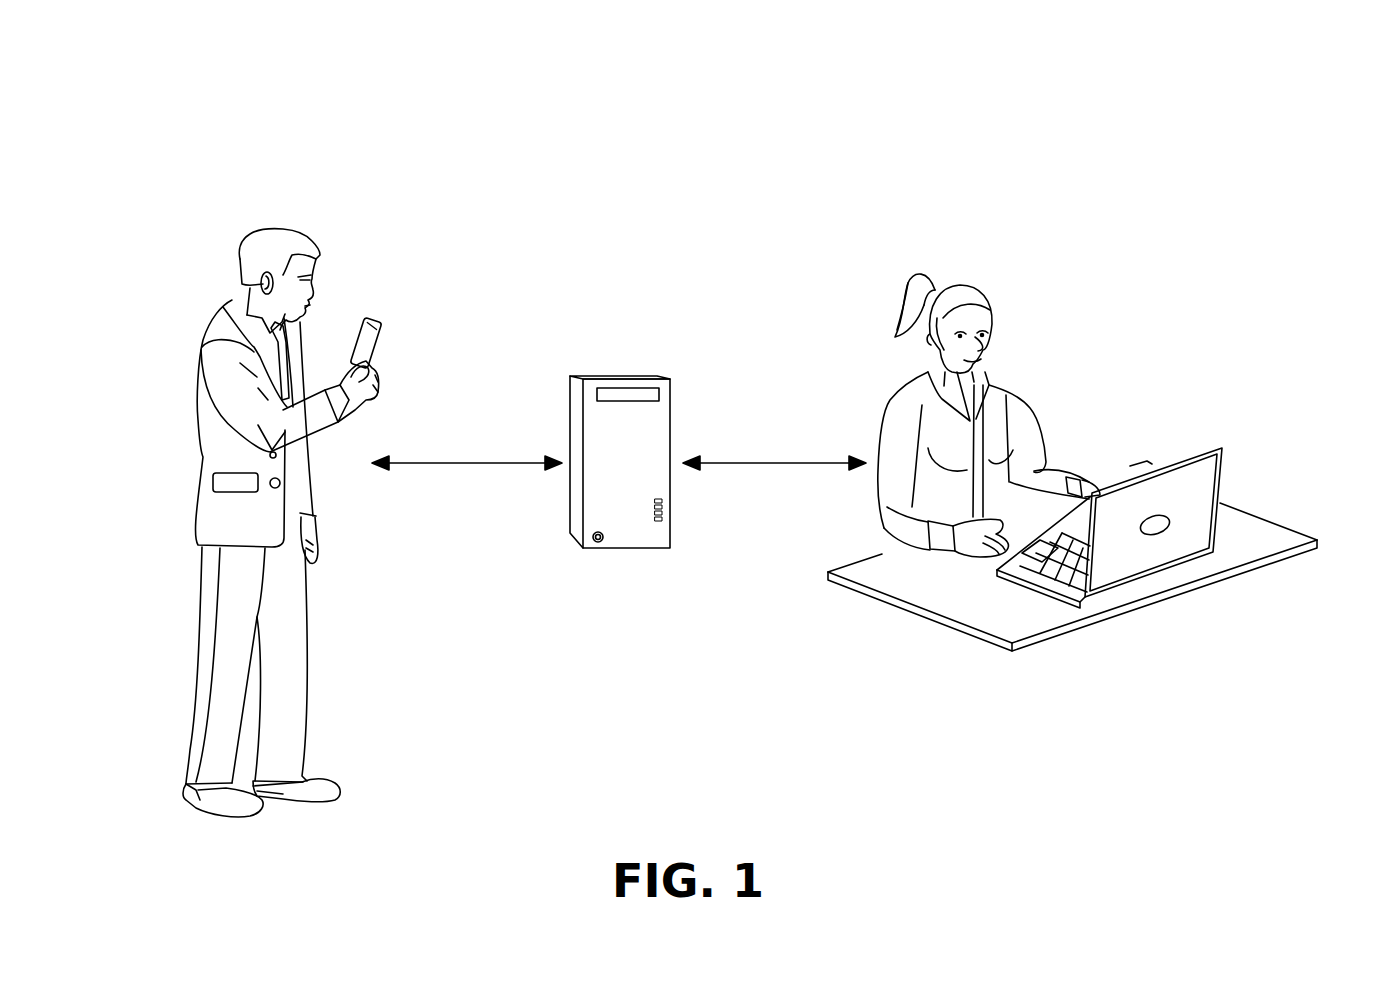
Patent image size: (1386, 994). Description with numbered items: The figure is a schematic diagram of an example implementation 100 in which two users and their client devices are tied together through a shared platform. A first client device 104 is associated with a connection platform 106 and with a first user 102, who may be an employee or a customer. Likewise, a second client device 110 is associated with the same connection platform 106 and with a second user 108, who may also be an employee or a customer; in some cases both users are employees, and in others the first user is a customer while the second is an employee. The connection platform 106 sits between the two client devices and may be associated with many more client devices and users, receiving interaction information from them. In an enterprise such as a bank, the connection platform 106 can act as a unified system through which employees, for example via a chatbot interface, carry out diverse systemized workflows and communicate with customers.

The example implementation 100 is at (752, 121).
The first user 102 is at (249, 210).
The first client device 104 is at (377, 318).
The connection platform 106 is at (618, 375).
The second user 108 is at (981, 265).
The second client device 110 is at (1180, 455).